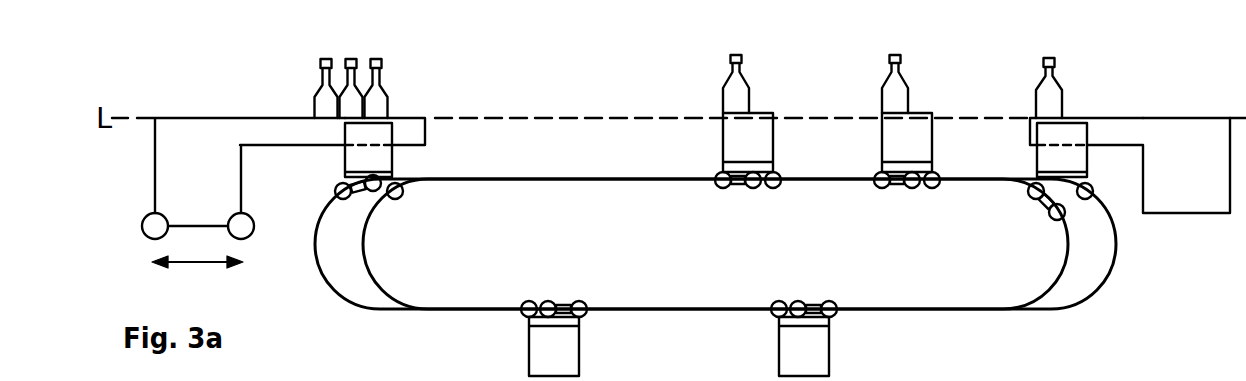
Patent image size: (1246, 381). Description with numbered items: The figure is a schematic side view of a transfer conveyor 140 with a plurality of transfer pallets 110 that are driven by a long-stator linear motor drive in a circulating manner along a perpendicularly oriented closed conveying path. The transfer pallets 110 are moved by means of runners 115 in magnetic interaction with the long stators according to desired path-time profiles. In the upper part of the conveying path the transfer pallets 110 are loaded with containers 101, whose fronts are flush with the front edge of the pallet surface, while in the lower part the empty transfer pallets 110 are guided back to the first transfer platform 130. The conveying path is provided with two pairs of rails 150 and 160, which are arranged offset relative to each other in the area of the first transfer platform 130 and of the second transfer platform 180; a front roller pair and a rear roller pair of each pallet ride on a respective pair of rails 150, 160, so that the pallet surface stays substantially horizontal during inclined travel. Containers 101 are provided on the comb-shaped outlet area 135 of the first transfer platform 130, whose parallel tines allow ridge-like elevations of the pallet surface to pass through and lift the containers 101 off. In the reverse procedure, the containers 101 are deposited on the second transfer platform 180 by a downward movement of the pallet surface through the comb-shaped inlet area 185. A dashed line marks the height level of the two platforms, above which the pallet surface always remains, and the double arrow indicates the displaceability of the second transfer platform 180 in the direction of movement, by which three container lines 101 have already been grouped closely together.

The container 101 is at (377, 59).
The transfer pallet 110 is at (345, 155).
The runner 115 is at (742, 188).
The first transfer platform 130 is at (1165, 118).
The comb-shaped outlet area 135 is at (1085, 118).
The transfer conveyor 140 is at (753, 273).
The pair of rails 150 is at (1060, 252).
The pair of rails 160 is at (1117, 242).
The second transfer platform 180 is at (190, 117).
The comb-shaped inlet area 185 is at (405, 117).